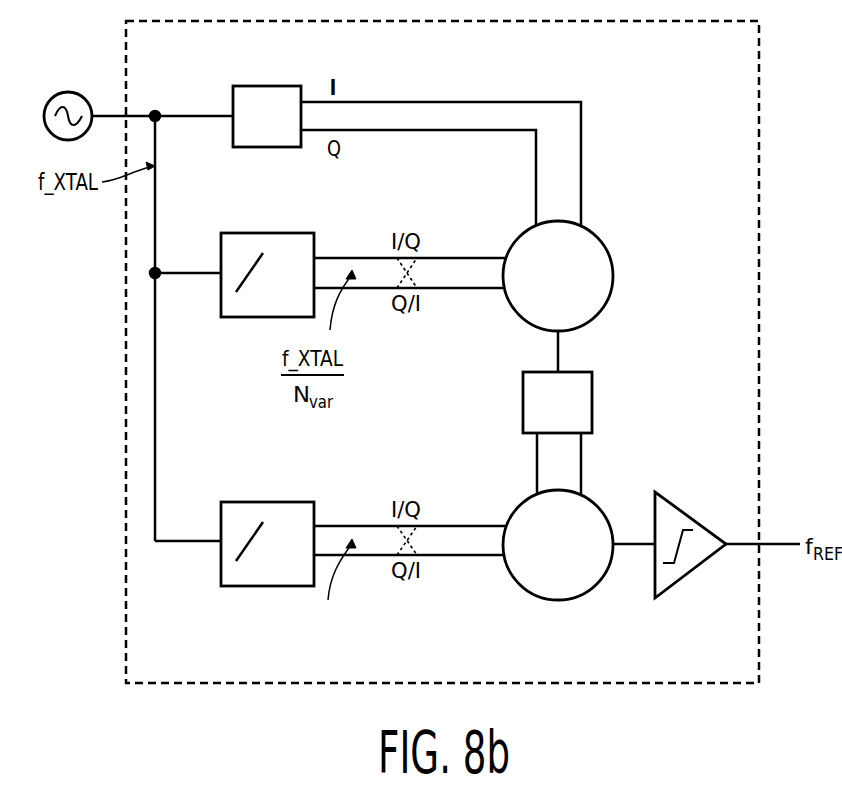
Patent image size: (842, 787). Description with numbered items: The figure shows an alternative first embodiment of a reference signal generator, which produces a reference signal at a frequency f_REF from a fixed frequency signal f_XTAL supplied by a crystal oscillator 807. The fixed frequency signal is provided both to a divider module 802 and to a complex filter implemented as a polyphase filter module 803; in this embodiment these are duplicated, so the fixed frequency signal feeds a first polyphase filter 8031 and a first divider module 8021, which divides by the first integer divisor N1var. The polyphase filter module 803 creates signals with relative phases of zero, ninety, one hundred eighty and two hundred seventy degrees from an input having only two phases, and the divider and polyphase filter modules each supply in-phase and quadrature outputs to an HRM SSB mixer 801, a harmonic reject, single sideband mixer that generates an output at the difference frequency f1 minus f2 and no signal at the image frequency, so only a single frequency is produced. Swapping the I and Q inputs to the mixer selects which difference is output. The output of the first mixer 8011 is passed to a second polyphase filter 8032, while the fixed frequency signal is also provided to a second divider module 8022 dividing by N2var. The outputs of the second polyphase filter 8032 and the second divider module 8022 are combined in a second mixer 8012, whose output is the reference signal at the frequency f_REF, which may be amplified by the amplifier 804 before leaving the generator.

The crystal oscillator 807 is at (68, 92).
The polyphase filter module 803 is at (390, 234).
The first polyphase filter 8031 is at (232, 90).
The second polyphase filter 8032 is at (523, 397).
The divider module 802 is at (255, 448).
The first divider module 8021 is at (245, 318).
The second divider module 8022 is at (262, 587).
The HRM SSB mixer 801 is at (556, 423).
The first mixer 8011 is at (603, 242).
The second mixer 8012 is at (523, 588).
The amplifier 804 is at (682, 503).